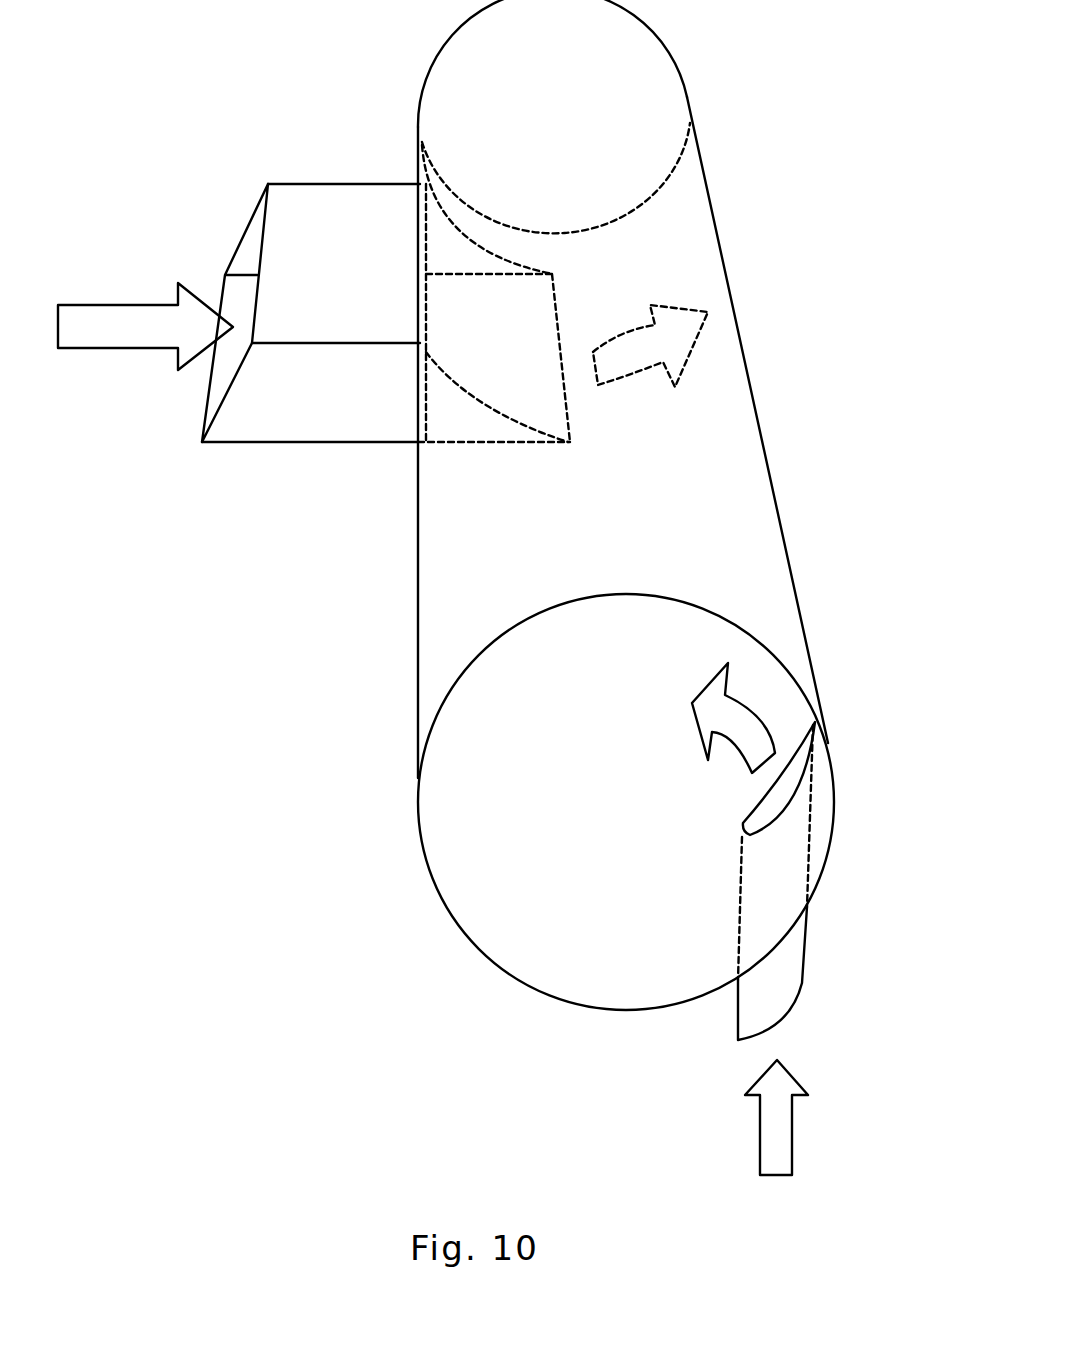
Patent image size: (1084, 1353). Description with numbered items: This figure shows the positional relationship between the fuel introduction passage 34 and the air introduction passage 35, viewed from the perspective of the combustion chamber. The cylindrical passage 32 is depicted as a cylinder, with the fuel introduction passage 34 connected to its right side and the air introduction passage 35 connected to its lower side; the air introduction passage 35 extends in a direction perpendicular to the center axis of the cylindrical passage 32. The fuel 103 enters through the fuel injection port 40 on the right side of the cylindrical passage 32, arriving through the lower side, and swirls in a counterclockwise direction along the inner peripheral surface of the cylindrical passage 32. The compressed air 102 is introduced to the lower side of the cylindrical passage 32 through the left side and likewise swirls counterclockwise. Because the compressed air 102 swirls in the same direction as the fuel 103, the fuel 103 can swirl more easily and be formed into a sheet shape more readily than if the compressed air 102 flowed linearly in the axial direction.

The cylindrical passage 32 is at (778, 488).
The air introduction passage 35 is at (278, 427).
The compressed air 102 is at (383, 355).
The fuel 103 is at (738, 939).
The fuel injection port 40 is at (777, 802).
The fuel introduction passage 34 is at (792, 947).